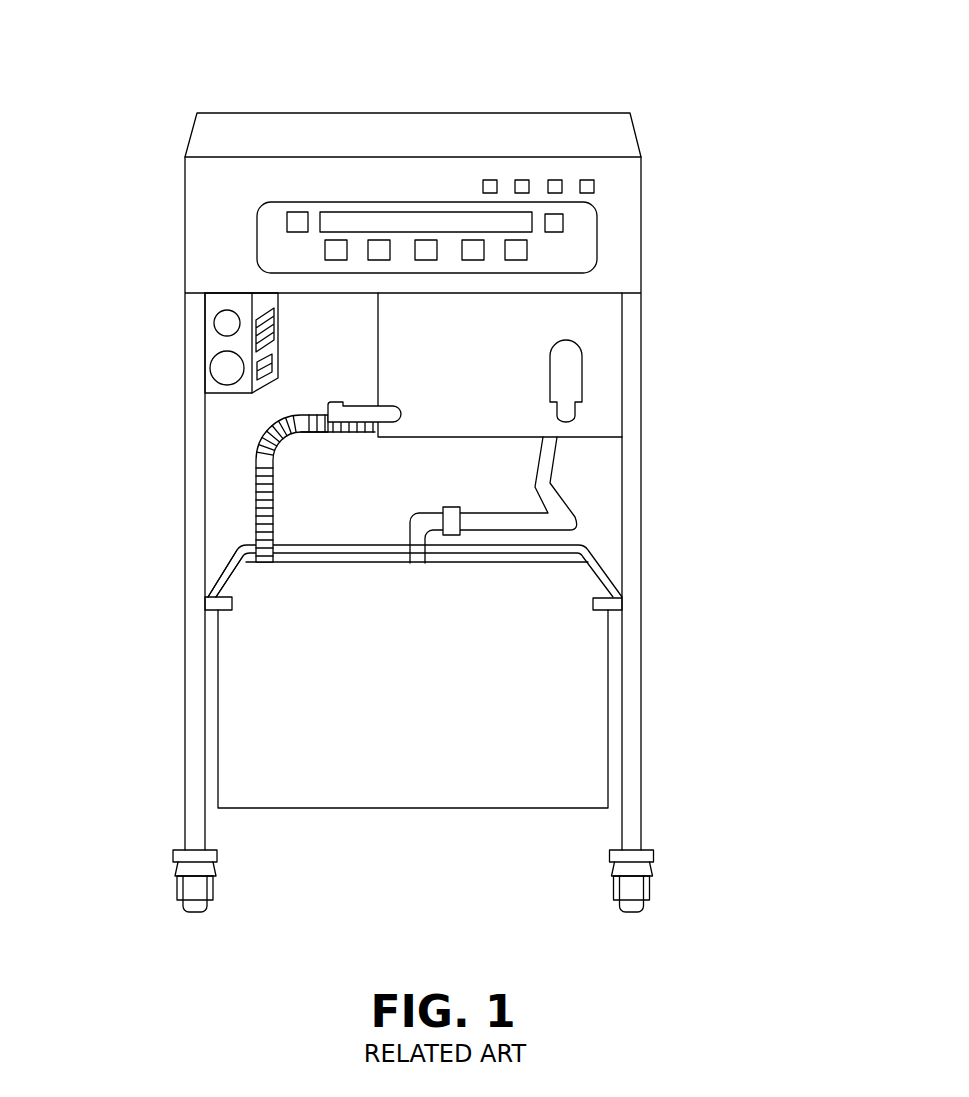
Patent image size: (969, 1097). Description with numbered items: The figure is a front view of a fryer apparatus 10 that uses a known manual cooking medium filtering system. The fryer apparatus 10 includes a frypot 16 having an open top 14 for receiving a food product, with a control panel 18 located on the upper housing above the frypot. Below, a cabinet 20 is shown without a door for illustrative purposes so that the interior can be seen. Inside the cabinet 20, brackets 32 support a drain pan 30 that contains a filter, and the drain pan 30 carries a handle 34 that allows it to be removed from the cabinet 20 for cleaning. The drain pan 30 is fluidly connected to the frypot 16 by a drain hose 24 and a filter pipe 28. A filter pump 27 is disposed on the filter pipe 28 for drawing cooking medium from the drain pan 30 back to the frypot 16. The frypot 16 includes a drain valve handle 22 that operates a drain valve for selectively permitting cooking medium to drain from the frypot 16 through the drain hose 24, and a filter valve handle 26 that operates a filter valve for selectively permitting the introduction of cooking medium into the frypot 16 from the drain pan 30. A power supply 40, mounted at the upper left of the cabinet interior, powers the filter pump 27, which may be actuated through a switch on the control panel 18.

The fryer apparatus 10 is at (742, 113).
The open top 14 is at (533, 105).
The frypot 16 is at (605, 345).
The control panel 18 is at (268, 240).
The cabinet 20 is at (628, 545).
The drain valve handle 22 is at (322, 408).
The drain hose 24 is at (258, 478).
The filter valve handle 26 is at (567, 387).
The filter pump 27 is at (465, 522).
The filter pipe 28 is at (567, 519).
The drain pan 30 is at (578, 740).
The brackets 32 is at (613, 604).
The handle 34 is at (227, 577).
The power supply 40 is at (208, 338).